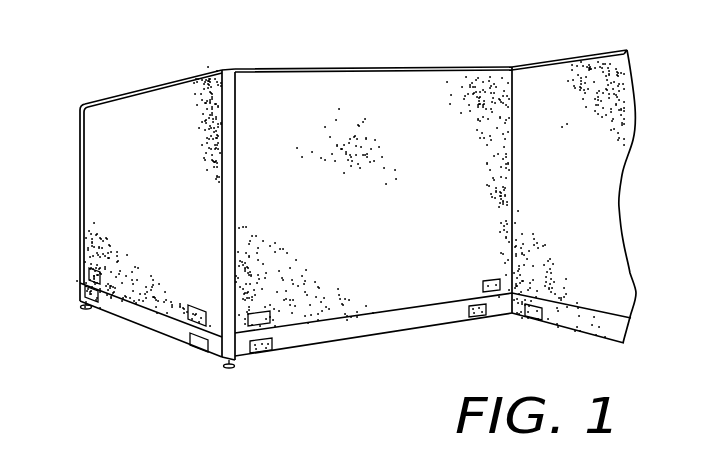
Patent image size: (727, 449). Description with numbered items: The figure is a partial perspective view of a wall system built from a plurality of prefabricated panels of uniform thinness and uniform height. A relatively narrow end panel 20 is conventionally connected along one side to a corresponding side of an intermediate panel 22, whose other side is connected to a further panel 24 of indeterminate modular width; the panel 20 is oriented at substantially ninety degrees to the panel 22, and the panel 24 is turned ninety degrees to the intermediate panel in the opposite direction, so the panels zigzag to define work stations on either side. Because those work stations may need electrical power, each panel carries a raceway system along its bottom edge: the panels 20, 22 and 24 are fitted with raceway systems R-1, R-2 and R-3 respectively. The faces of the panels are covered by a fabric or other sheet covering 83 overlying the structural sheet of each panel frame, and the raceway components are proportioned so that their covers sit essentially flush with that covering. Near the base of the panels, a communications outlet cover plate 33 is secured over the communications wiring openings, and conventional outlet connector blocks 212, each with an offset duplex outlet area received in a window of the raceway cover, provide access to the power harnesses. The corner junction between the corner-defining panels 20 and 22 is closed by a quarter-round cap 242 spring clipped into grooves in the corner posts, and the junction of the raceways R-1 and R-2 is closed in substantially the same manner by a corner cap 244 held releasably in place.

The panel 20 is at (158, 76).
The panel 22 is at (371, 63).
The panel 24 is at (614, 46).
The quarter-round cap 242 is at (238, 88).
The corner cap 244 is at (237, 356).
The communications outlet cover plate 33 is at (88, 276).
The sheet covering 83 is at (370, 263).
The outlet connector block 212 is at (480, 318).
The raceway system R-1 is at (150, 336).
The raceway system R-2 is at (370, 338).
The raceway system R-3 is at (603, 340).